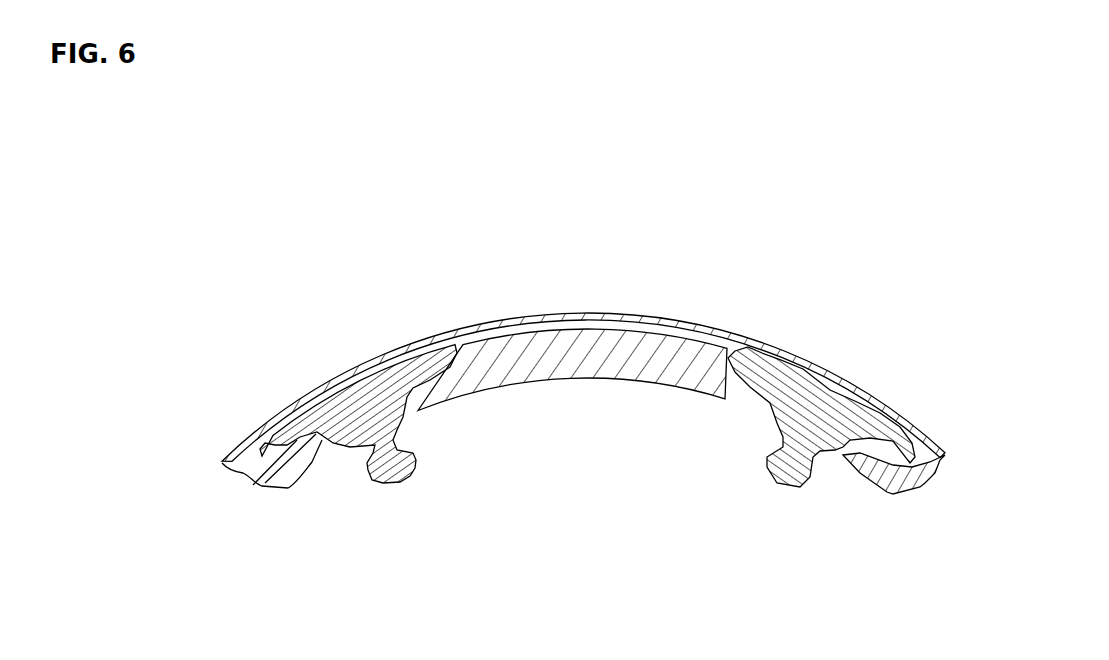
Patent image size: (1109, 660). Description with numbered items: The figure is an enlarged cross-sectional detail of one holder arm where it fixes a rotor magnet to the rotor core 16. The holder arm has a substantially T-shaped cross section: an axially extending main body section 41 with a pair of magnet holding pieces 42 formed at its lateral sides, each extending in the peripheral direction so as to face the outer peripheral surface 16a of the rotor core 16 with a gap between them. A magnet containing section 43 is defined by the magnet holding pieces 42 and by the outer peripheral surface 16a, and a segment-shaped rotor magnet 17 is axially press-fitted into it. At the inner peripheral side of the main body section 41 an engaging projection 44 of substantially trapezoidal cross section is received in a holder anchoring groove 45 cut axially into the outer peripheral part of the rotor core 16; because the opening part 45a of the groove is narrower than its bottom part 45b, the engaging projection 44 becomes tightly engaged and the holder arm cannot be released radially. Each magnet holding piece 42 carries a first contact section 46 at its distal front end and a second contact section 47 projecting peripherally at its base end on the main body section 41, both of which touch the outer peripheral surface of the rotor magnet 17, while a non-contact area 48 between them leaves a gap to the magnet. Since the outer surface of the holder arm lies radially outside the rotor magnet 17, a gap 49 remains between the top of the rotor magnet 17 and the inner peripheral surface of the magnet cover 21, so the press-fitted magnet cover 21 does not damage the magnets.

The rotor core 16 is at (542, 418).
The outer peripheral surface of the rotor core 16a is at (686, 384).
The rotor magnet 17 is at (650, 345).
The magnet cover 21 is at (765, 352).
The main body section 41 is at (363, 423).
The magnet holding piece 42 is at (420, 345).
The magnet containing section 43 is at (521, 338).
The engaging projection 44 is at (415, 457).
The holder anchoring groove 45 is at (396, 474).
The opening part 45a is at (363, 450).
The bottom part 45b is at (394, 486).
The first contact section 46 is at (257, 483).
The second contact section 47 is at (323, 450).
The non-contact area 48 is at (293, 490).
The gap 49 is at (623, 328).